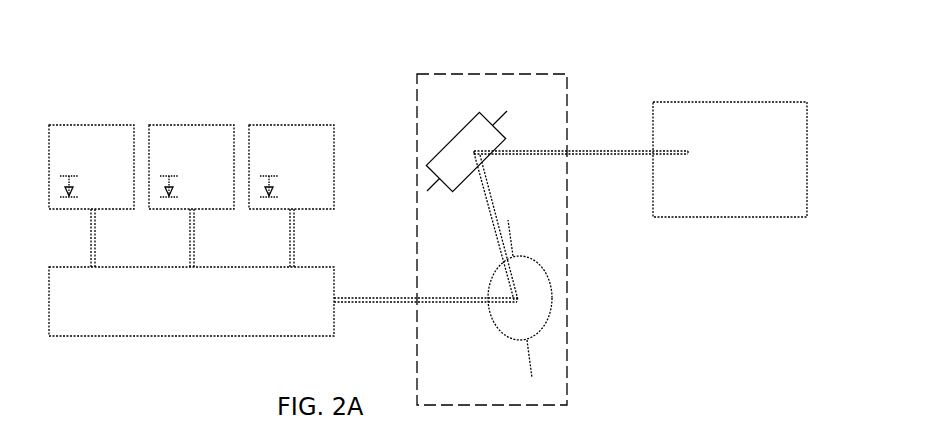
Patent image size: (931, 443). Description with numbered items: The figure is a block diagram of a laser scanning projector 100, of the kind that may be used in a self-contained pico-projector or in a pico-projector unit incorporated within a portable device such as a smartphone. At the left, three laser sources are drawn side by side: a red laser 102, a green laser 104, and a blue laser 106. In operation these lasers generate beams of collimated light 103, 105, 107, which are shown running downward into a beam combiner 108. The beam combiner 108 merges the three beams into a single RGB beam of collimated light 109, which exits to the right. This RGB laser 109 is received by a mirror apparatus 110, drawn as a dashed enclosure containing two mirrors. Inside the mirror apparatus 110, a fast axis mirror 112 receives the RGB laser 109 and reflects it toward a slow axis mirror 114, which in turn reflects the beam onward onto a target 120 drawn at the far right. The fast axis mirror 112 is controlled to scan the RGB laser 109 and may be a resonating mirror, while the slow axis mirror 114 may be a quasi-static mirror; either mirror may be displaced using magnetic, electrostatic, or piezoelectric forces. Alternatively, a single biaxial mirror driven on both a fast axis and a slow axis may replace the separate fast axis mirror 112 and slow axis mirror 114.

The laser scanning projector 100 is at (180, 26).
The red laser 102 is at (80, 125).
The beam of collimated light 103 is at (89, 254).
The green laser 104 is at (180, 125).
The beam of collimated light 105 is at (190, 254).
The blue laser 106 is at (283, 125).
The beam of collimated light 107 is at (290, 254).
The beam combiner 108 is at (70, 336).
The RGB beam of collimated light 109 is at (405, 299).
The mirror apparatus 110 is at (557, 73).
The fast axis mirror 112 is at (550, 317).
The slow axis mirror 114 is at (432, 156).
The target 120 is at (743, 101).